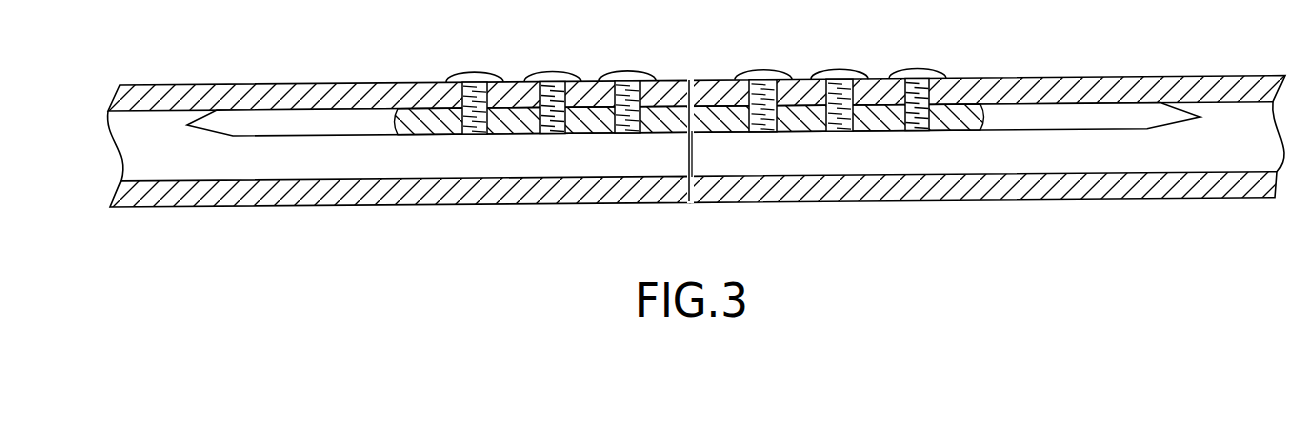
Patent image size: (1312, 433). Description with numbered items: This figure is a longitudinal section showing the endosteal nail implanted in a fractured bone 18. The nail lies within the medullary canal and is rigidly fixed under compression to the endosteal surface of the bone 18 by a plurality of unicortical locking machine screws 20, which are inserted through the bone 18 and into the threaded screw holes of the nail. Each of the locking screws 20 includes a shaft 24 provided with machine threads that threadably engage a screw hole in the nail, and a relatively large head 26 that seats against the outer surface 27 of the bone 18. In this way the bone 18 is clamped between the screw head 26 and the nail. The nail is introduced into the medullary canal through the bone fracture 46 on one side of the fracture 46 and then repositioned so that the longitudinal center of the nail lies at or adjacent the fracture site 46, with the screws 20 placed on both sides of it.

The bone 18 is at (272, 84).
The locking screws 20 is at (500, 81).
The shaft 24 is at (452, 94).
The head 26 is at (478, 72).
The outer surface 27 is at (1132, 77).
The bone fracture 46 is at (695, 160).